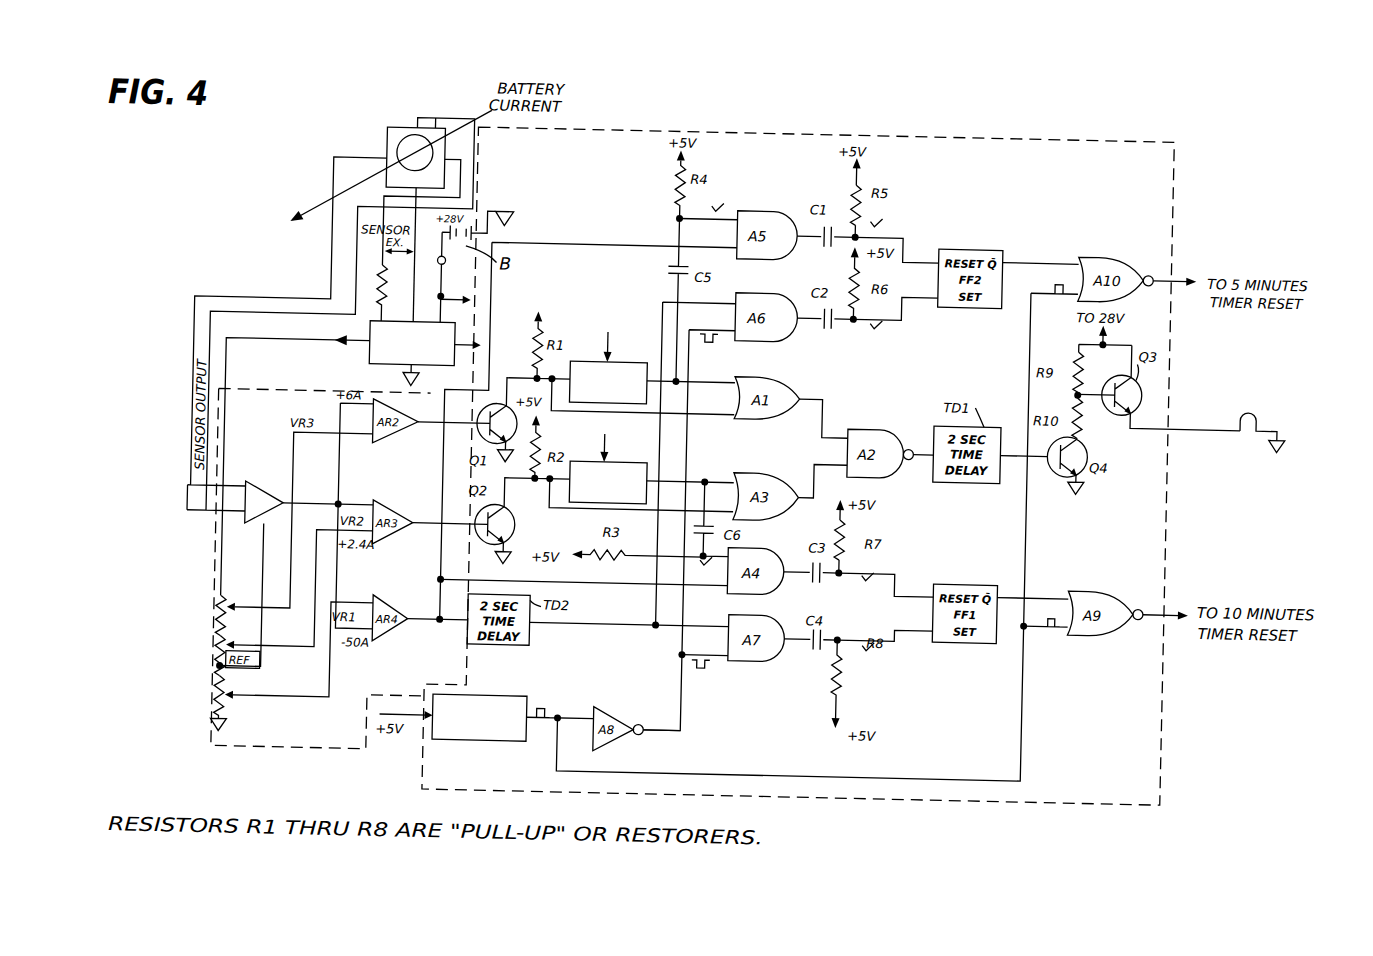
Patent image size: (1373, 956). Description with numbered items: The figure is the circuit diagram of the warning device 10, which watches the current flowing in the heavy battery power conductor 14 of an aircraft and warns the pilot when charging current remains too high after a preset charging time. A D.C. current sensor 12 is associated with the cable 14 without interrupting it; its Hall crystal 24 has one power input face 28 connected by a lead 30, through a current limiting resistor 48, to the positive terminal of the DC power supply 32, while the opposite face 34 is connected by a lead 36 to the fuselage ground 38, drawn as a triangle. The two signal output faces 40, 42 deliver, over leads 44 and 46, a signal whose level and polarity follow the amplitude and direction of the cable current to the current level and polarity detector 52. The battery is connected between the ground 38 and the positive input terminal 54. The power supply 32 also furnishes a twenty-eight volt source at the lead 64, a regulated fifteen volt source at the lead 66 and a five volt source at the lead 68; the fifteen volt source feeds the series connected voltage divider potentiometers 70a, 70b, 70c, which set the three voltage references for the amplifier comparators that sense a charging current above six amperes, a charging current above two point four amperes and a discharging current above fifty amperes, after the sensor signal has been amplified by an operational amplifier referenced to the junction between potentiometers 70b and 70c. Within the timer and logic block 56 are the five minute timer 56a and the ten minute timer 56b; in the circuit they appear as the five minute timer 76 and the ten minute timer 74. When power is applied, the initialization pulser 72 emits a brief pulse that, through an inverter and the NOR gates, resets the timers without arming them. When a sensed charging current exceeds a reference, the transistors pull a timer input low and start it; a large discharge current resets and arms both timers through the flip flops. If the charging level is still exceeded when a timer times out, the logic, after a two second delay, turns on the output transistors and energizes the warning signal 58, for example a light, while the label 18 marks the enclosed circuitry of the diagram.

The warning device 10 is at (960, 144).
The D.C. current sensor 12 is at (348, 129).
The battery power conductor 14 is at (367, 184).
The circuit enclosure 18 is at (623, 138).
The Hall crystal 24 is at (381, 137).
The power input face 28 is at (418, 109).
The lead 30 is at (464, 177).
The DC power supply 32 is at (384, 373).
The opposite face 34 is at (380, 204).
The lead 36 is at (352, 216).
The ground 38 is at (503, 224).
The signal output face 40 is at (380, 155).
The signal output face 42 is at (464, 148).
The lead 44 is at (189, 509).
The lead 46 is at (289, 458).
The current limiting resistor 48 is at (382, 287).
The current level and polarity detector 52 is at (264, 402).
The terminal 54 is at (434, 268).
The timer and logic block 56 is at (1028, 549).
The 5 minute timer 56a is at (569, 364).
The 10 minute timer 56b is at (581, 507).
The warning signal 58 is at (1257, 402).
The lead 64 is at (455, 296).
The lead 66 is at (349, 354).
The lead 68 is at (459, 351).
The voltage divider potentiometer 70a is at (218, 618).
The voltage divider potentiometer 70b is at (218, 656).
The voltage divider potentiometer 70c is at (218, 706).
The initialization pulser 72 is at (523, 701).
The 10 minute timer 74 is at (644, 467).
The 5 minute timer 76 is at (642, 367).